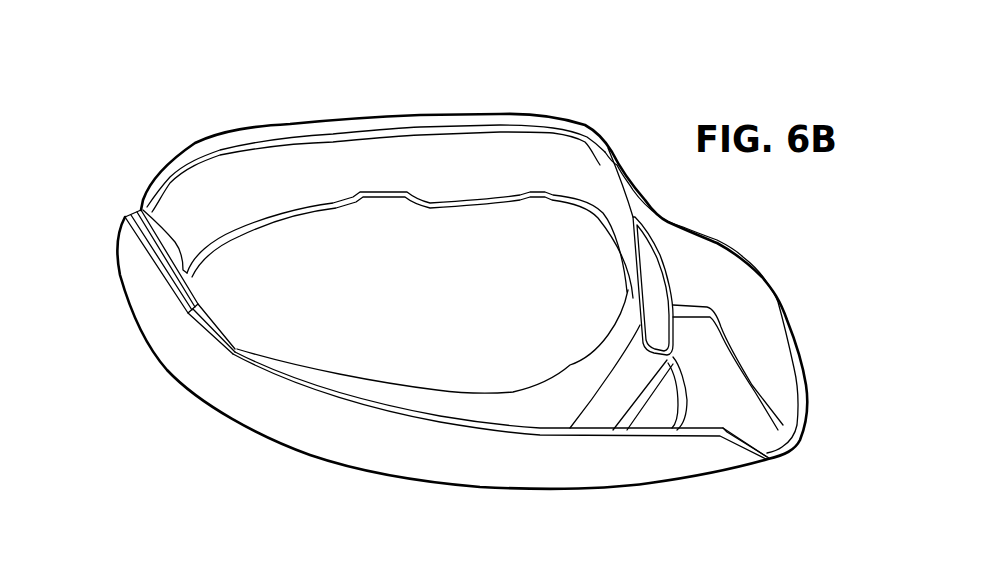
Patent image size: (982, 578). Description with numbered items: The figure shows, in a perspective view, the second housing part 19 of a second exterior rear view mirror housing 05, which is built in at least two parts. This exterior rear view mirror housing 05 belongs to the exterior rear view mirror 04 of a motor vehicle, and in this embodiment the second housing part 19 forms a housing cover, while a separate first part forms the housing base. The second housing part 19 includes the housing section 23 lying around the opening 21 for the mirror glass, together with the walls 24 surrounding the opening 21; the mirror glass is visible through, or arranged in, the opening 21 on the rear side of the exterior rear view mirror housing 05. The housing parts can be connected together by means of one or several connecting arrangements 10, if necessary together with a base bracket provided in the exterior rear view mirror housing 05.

The connecting arrangement 10 is at (140, 151).
The exterior rear view mirror 04 is at (799, 311).
The exterior rear view mirror housing 05 is at (177, 360).
The second housing part 19 is at (288, 433).
The opening 21 is at (435, 294).
The housing section 23 is at (523, 140).
The walls 24 is at (318, 158).